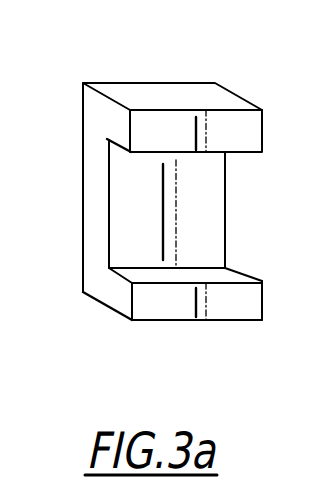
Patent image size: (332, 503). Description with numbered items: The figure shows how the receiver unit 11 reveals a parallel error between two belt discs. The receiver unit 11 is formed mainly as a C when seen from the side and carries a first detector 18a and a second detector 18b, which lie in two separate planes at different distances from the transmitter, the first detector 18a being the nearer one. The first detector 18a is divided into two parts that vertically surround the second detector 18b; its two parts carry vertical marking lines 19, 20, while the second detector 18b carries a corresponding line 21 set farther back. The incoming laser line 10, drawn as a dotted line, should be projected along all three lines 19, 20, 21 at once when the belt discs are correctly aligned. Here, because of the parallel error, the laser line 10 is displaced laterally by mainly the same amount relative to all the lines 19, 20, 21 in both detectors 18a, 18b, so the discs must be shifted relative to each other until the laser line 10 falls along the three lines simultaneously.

The laser line 10 is at (208, 310).
The receiver unit 11 is at (217, 91).
The first detector 18a is at (140, 131).
The second detector 18b is at (133, 184).
The line 19 is at (193, 132).
The line 20 is at (198, 303).
The line 21 is at (163, 210).